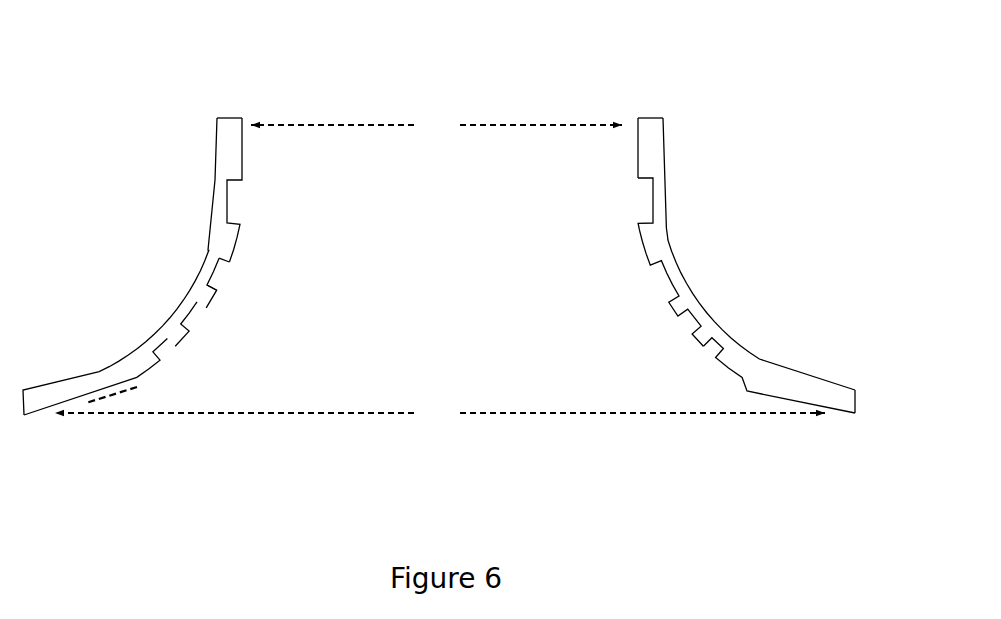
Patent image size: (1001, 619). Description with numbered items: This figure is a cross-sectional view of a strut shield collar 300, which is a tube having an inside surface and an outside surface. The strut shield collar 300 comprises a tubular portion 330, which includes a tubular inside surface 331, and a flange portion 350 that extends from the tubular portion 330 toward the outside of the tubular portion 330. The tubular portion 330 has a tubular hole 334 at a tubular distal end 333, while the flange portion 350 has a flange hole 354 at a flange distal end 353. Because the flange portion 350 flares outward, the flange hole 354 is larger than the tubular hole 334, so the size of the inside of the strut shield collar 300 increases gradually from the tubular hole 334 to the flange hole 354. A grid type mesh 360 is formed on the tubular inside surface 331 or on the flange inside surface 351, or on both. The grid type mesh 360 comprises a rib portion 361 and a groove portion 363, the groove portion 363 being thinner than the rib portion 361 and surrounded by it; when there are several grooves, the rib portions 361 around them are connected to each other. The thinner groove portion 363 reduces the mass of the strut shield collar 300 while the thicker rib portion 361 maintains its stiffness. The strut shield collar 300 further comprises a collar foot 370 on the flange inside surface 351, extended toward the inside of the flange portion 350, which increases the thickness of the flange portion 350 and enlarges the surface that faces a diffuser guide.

The strut shield collar 300 is at (172, 55).
The tubular portion 330 is at (694, 113).
The tubular inside surface 331 is at (637, 151).
The tubular distal end 333 is at (645, 114).
The tubular hole 334 is at (436, 124).
The flange portion 350 is at (874, 228).
The flange inside surface 351 is at (716, 368).
The flange distal end 353 is at (858, 411).
The flange hole 354 is at (440, 411).
The grid type mesh 360 is at (343, 280).
The rib portion 361 is at (228, 253).
The groove portion 363 is at (208, 288).
The collar foot 370 is at (138, 386).